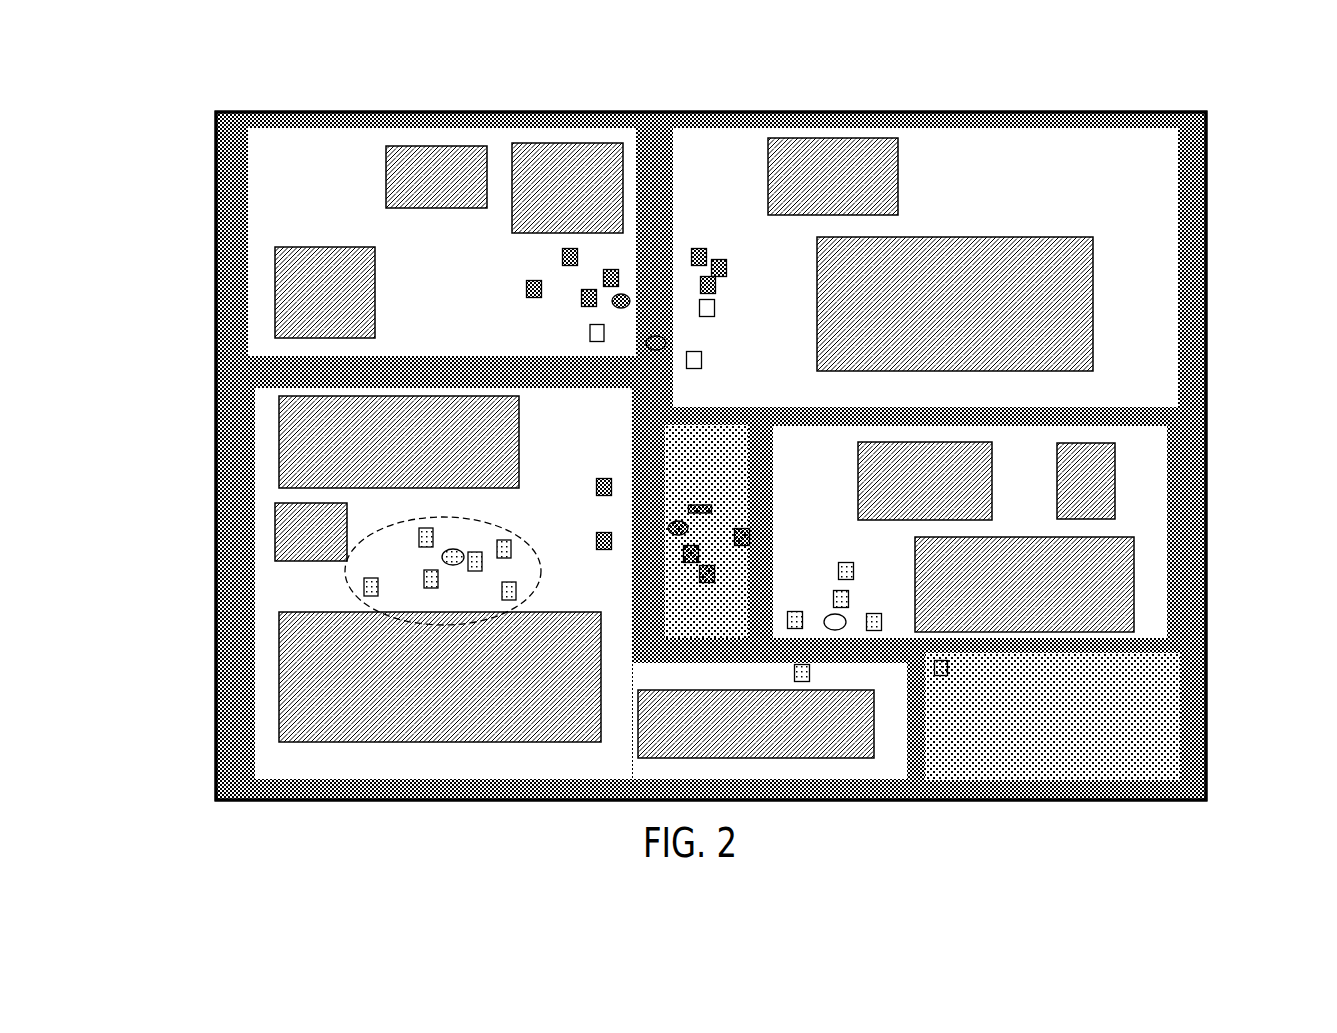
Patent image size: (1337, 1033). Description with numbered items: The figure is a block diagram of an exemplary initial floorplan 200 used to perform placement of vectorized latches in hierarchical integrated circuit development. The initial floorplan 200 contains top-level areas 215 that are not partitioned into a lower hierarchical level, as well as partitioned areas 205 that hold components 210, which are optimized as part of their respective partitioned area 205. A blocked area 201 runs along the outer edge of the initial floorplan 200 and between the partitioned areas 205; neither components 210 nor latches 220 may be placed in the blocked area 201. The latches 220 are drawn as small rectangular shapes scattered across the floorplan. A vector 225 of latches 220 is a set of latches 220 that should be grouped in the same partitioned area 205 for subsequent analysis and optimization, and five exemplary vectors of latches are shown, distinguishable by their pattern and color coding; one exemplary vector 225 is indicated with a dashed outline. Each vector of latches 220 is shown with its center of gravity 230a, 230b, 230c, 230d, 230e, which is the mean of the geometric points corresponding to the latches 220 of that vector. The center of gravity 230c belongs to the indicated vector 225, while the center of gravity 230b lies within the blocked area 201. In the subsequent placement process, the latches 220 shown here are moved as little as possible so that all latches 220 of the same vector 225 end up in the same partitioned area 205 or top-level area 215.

The initial floorplan 200 is at (1238, 125).
The blocked area 201 is at (655, 128).
The partitioned area 205 is at (253, 288).
The component 210 is at (1120, 565).
The top-level area 215 is at (1145, 717).
The latch 220 is at (583, 333).
The vector of latches 225 is at (344, 583).
The center of gravity 230a is at (633, 290).
The center of gravity 230b is at (677, 339).
The center of gravity 230c is at (467, 544).
The center of gravity 230d is at (670, 512).
The center of gravity 230e is at (823, 610).